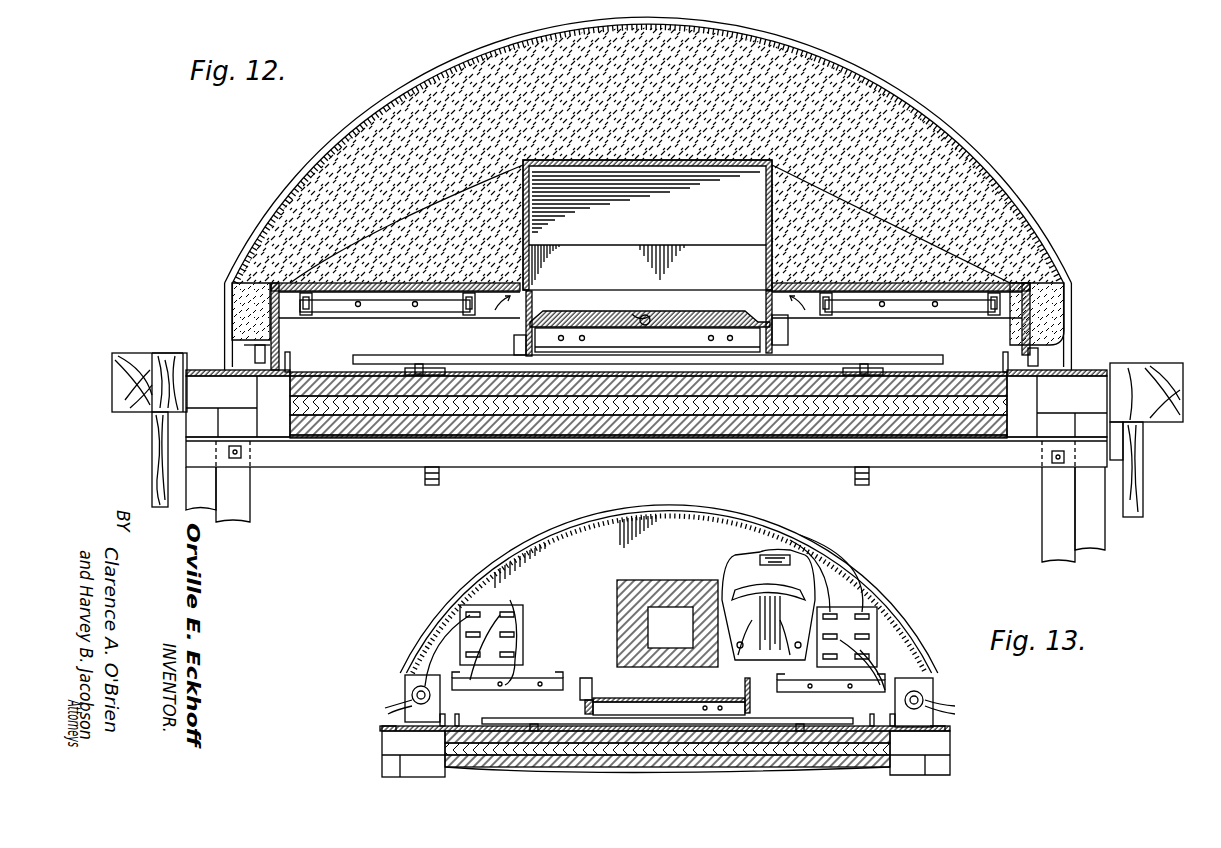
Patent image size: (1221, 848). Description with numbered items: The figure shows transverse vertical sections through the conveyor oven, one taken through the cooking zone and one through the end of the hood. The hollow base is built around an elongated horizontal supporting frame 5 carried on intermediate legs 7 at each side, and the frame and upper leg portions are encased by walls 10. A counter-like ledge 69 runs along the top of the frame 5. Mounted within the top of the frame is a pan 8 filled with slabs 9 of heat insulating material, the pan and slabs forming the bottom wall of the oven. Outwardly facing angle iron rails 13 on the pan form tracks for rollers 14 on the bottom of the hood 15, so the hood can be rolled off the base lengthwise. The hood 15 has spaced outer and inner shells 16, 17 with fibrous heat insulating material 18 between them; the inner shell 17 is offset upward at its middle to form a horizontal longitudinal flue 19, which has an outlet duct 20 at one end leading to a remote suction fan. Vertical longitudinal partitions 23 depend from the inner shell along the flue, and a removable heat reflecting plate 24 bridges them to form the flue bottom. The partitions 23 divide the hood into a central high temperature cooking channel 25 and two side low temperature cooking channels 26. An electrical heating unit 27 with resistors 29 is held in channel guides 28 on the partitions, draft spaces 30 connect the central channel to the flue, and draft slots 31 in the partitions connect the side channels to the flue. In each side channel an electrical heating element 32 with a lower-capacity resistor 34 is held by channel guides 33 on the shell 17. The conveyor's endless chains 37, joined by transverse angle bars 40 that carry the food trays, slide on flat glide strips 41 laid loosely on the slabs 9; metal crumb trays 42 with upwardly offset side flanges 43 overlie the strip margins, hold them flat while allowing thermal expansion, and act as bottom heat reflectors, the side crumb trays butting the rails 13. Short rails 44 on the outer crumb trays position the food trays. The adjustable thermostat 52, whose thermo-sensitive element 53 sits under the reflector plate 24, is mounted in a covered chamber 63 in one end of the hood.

In FIG. 12, the horizontal supporting frame 5 is at (170, 382).
In FIG. 13, the horizontal supporting frame 5 is at (382, 731).
In FIG. 12, the intermediate legs 7 is at (245, 489).
In FIG. 12, the pan 8 is at (365, 440).
In FIG. 13, the pan 8 is at (382, 767).
In FIG. 12, the slabs of heat insulating material 9 is at (502, 395).
In FIG. 13, the slabs of heat insulating material 9 is at (530, 738).
In FIG. 12, the walls 10 is at (152, 473).
In FIG. 12, the angle iron rails 13 is at (293, 350).
In FIG. 13, the angle iron rails 13 is at (443, 716).
In FIG. 12, the rollers 14 is at (258, 352).
In FIG. 13, the rollers 14 is at (663, 739).
In FIG. 12, the hood 15 is at (260, 224).
In FIG. 13, the hood 15 is at (466, 580).
In FIG. 12, the outer shell 16 is at (310, 168).
In FIG. 13, the outer shell 16 is at (552, 535).
In FIG. 12, the inner shell 17 is at (650, 314).
In FIG. 12, the fibrous heat insulating material 18 is at (422, 100).
In FIG. 12, the horizontal longitudinal flue 19 is at (647, 225).
In FIG. 13, the outlet duct 20 is at (660, 600).
In FIG. 12, the vertical longitudinal partitions 23 is at (514, 345).
In FIG. 13, the vertical longitudinal partitions 23 is at (585, 705).
In FIG. 12, the heat reflecting plate 24 is at (650, 307).
In FIG. 12, the high temperature cooking channel 25 is at (592, 335).
In FIG. 13, the high temperature cooking channel 25 is at (672, 712).
In FIG. 12, the low temperature cooking channels 26 is at (418, 318).
In FIG. 13, the low temperature cooking channels 26 is at (681, 702).
In FIG. 12, the electrical heating unit 27 is at (670, 328).
In FIG. 13, the electrical heating unit 27 is at (622, 697).
In FIG. 12, the channel guides 28 is at (525, 355).
In FIG. 13, the channel guides 28 is at (595, 680).
In FIG. 12, the resistors 29 is at (582, 342).
In FIG. 12, the draft spaces 30 is at (785, 322).
In FIG. 12, the draft slots 31 is at (496, 312).
In FIG. 12, the electrical heating element 32 is at (380, 305).
In FIG. 13, the electrical heating element 32 is at (540, 676).
In FIG. 12, the channel guides 33 is at (306, 315).
In FIG. 13, the channel guides 33 is at (410, 680).
In FIG. 12, the resistor 34 is at (359, 301).
In FIG. 12, the endless chains 37 is at (419, 364).
In FIG. 13, the endless chains 37 is at (536, 724).
In FIG. 12, the transverse angle bars 40 is at (353, 359).
In FIG. 13, the transverse angle bars 40 is at (490, 718).
In FIG. 12, the glide strips 41 is at (422, 378).
In FIG. 13, the glide strips 41 is at (545, 735).
In FIG. 12, the crumb trays 42 is at (648, 405).
In FIG. 13, the crumb trays 42 is at (667, 757).
In FIG. 12, the side flanges 43 is at (410, 368).
In FIG. 13, the short rails 44 is at (459, 724).
In FIG. 13, the adjustable thermostat 52 is at (728, 570).
In FIG. 12, the thermo-sensitive element 53 is at (642, 315).
In FIG. 13, the covered chamber 63 is at (586, 572).
In FIG. 12, the counter-like ledge 69 is at (122, 358).